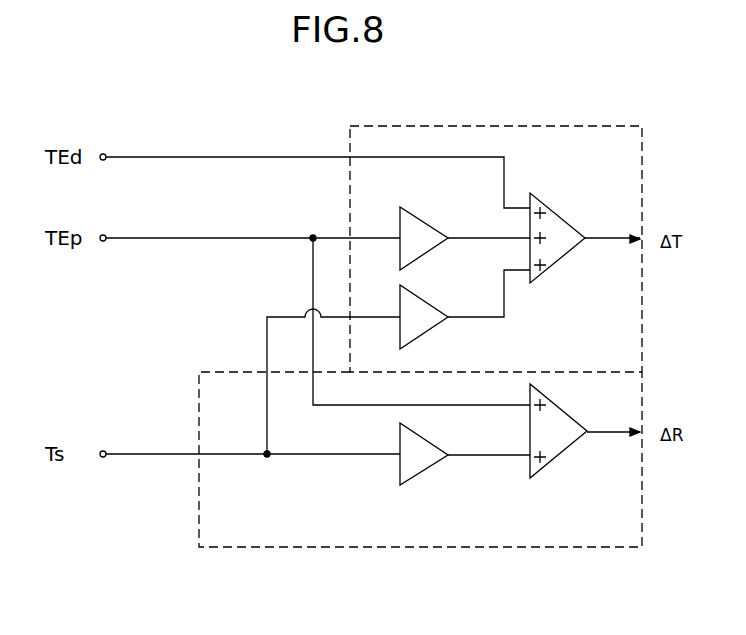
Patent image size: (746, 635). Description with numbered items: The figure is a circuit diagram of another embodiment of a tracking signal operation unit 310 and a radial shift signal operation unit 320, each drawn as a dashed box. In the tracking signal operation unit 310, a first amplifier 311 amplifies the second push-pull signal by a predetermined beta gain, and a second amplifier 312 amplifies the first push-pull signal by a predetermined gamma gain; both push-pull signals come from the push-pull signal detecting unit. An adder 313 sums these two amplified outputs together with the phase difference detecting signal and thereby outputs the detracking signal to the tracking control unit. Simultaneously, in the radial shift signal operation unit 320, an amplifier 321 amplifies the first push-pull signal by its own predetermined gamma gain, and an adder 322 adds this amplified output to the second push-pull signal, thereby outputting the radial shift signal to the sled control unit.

The tracking signal operation unit 310 is at (556, 136).
The first amplifier 311 is at (421, 232).
The second amplifier 312 is at (428, 328).
The adder 313 is at (560, 228).
The radial shift signal operation unit 320 is at (602, 540).
The amplifier 321 is at (425, 472).
The adder 322 is at (560, 417).